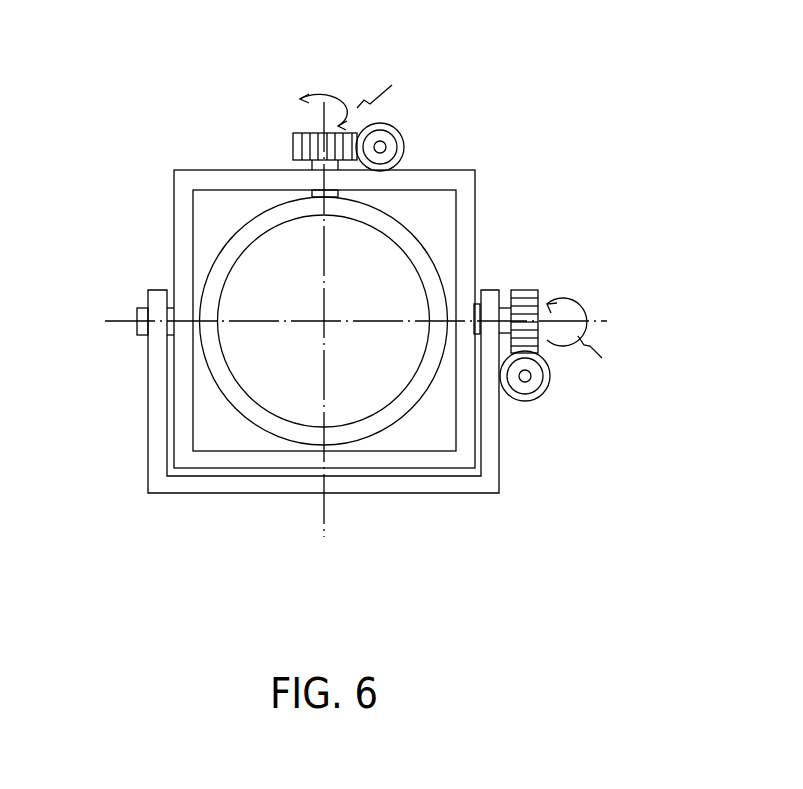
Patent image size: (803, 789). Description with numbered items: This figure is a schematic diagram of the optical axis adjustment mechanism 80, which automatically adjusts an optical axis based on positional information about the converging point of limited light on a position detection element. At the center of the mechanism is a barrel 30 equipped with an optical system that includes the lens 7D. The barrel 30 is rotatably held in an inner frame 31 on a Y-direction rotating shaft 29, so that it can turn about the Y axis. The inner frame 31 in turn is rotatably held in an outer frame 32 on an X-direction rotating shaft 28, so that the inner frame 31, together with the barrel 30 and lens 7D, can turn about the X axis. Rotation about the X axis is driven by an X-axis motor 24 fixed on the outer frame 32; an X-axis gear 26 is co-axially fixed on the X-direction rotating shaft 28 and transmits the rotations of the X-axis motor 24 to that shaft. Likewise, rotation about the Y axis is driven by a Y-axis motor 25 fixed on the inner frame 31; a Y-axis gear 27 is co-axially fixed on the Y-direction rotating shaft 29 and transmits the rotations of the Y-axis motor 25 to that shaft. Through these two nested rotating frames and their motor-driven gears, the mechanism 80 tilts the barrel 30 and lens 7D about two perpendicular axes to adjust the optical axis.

The optical axis adjustment mechanism 80 is at (500, 38).
The lens 7D is at (372, 403).
The barrel 30 is at (307, 435).
The inner frame 31 is at (183, 273).
The outer frame 32 is at (207, 490).
The X-axis motor 24 is at (541, 395).
The Y-axis motor 25 is at (386, 147).
The X-axis gear 26 is at (534, 290).
The Y-axis gear 27 is at (293, 148).
The X-direction rotating shaft 28 is at (476, 302).
The Y-direction rotating shaft 29 is at (312, 196).